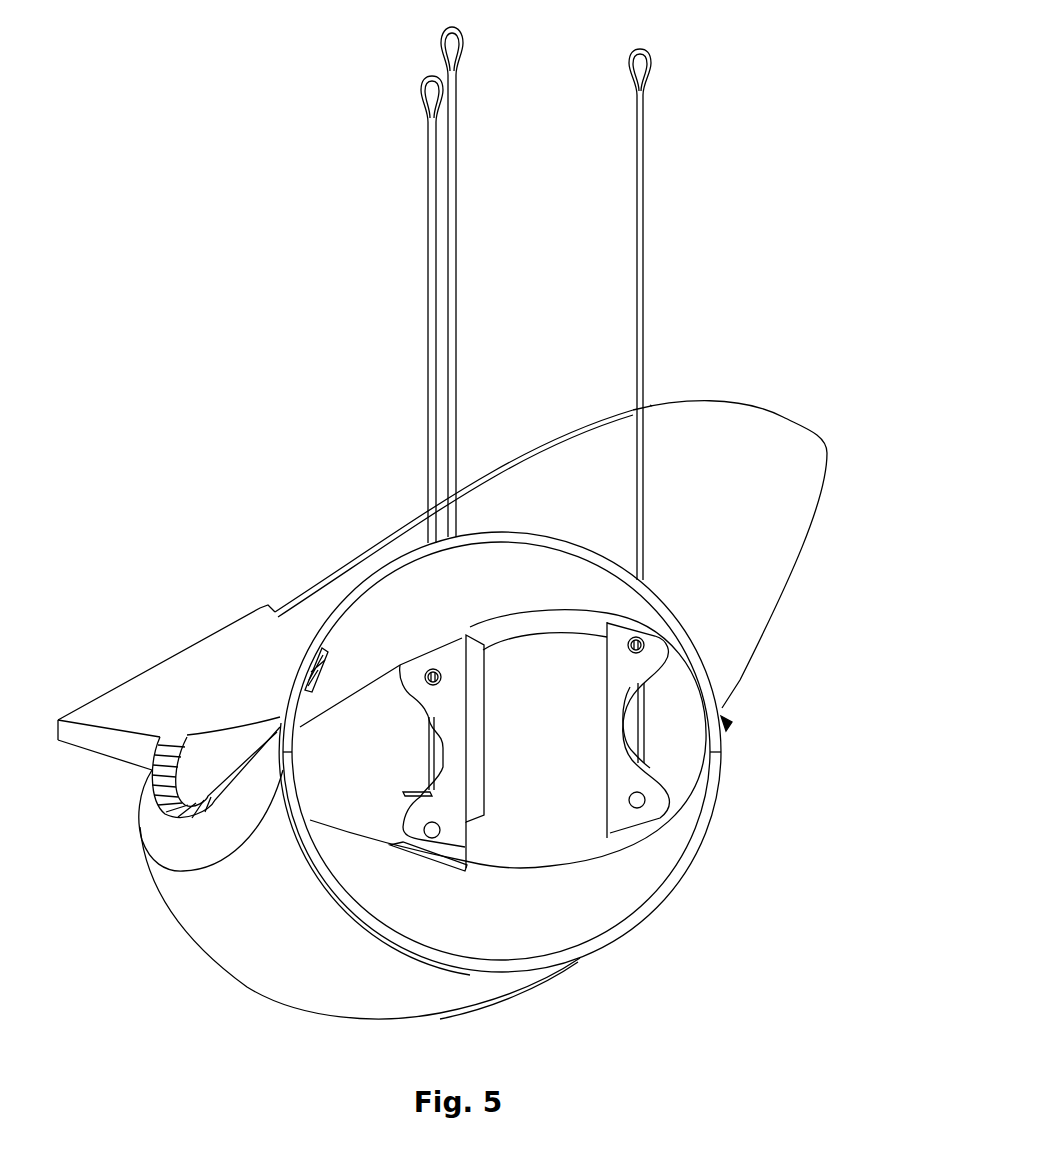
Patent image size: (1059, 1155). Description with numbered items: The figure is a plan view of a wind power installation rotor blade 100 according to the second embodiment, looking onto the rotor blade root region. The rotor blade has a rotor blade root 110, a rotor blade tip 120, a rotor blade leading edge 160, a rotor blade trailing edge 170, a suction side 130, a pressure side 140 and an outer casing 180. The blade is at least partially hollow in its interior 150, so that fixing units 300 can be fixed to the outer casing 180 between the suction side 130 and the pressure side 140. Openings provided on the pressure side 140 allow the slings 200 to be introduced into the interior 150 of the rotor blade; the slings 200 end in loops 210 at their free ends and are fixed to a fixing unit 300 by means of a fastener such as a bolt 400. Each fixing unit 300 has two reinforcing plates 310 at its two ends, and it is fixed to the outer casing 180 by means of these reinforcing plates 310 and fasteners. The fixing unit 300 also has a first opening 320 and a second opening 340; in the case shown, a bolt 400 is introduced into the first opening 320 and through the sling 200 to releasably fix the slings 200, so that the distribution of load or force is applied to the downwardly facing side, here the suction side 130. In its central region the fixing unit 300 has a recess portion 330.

The lure body 100 is at (333, 550).
The rotor blade root 110 is at (640, 918).
The rotor blade tip 120 is at (753, 407).
The suction side 130 is at (685, 472).
The pressure side 140 is at (732, 726).
The interior 150 is at (339, 703).
The rotor blade leading edge 160 is at (783, 607).
The rotor blade trailing edge 170 is at (398, 527).
The outer casing 180 is at (357, 633).
The sling 200 is at (454, 100).
The wire loop 210 is at (643, 63).
The fixing unit 300 is at (610, 676).
The reinforcing plate 310 is at (458, 630).
The first opening 320 is at (463, 853).
The recess portion 330 is at (617, 732).
The second opening 340 is at (628, 647).
The bolt 400 is at (403, 837).